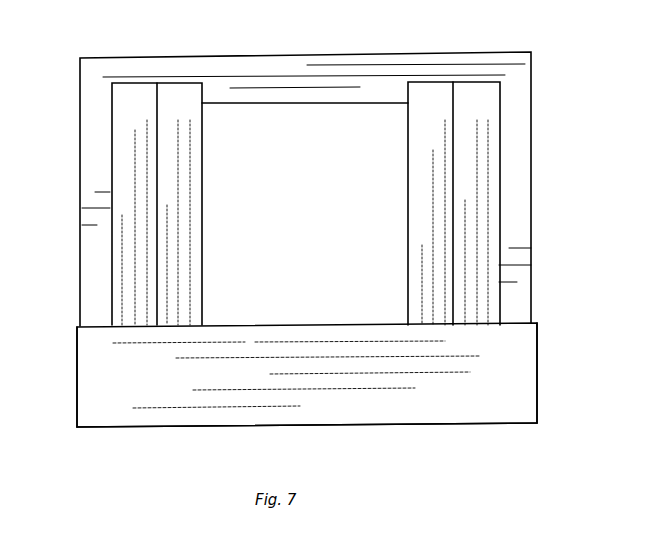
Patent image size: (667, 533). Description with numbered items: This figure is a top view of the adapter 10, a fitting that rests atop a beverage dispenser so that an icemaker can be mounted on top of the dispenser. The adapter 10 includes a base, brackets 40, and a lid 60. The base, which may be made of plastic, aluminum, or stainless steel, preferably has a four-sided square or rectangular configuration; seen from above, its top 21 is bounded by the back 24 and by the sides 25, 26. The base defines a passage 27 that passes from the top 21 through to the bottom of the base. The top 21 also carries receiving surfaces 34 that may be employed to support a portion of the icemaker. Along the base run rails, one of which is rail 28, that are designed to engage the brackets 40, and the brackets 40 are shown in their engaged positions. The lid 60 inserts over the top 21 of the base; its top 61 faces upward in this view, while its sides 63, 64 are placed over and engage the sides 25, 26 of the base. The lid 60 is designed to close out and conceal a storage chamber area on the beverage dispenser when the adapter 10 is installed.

The adapter 10 is at (552, 222).
The top 21 is at (129, 70).
The back 24 is at (300, 55).
The side 25 is at (80, 183).
The side 26 is at (535, 170).
The passage 27 is at (308, 218).
The rail 28 is at (230, 90).
The receiving surfaces 34 is at (220, 63).
The brackets 40 is at (142, 116).
The lid 60 is at (520, 362).
The top 61 is at (90, 380).
The side 63 is at (77, 362).
The side 64 is at (540, 388).